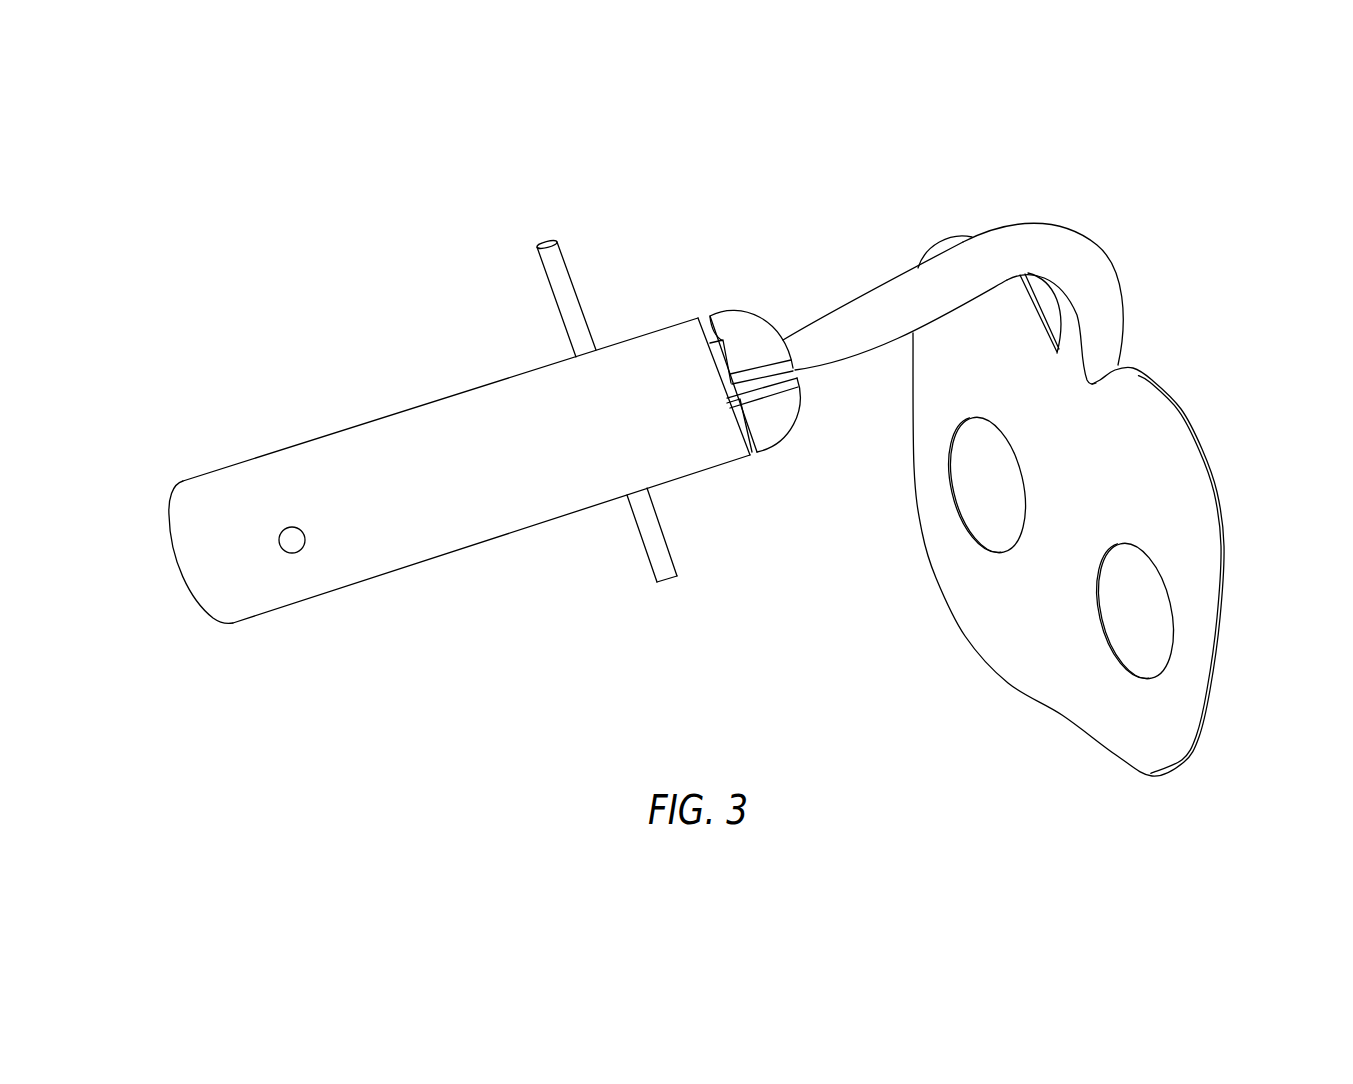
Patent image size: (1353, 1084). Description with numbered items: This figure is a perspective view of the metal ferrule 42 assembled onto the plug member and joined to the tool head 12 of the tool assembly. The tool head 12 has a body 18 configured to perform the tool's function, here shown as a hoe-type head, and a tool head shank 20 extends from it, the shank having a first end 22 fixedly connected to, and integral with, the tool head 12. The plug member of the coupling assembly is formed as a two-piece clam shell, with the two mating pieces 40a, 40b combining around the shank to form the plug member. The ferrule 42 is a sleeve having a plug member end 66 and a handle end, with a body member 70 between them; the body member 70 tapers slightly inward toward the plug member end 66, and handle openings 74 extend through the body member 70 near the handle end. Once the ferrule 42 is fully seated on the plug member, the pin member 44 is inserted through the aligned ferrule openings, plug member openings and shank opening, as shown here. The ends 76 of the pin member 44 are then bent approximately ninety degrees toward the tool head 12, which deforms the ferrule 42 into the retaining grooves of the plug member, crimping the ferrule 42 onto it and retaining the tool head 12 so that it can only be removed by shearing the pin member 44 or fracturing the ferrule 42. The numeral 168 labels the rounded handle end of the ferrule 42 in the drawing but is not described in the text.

The tool head 12 is at (1240, 604).
The body 18 is at (1181, 508).
The tool head shank 20 is at (863, 318).
The first end 22 is at (1069, 357).
The mating piece 40a is at (778, 326).
The mating piece 40b is at (773, 432).
The ferrule 42 is at (343, 448).
The pin member 44 is at (640, 540).
The plug member end 66 is at (720, 335).
The body member 70 is at (423, 540).
The handle openings 74 is at (292, 553).
The ends 76 is at (545, 243).
The handle end 168 is at (170, 543).